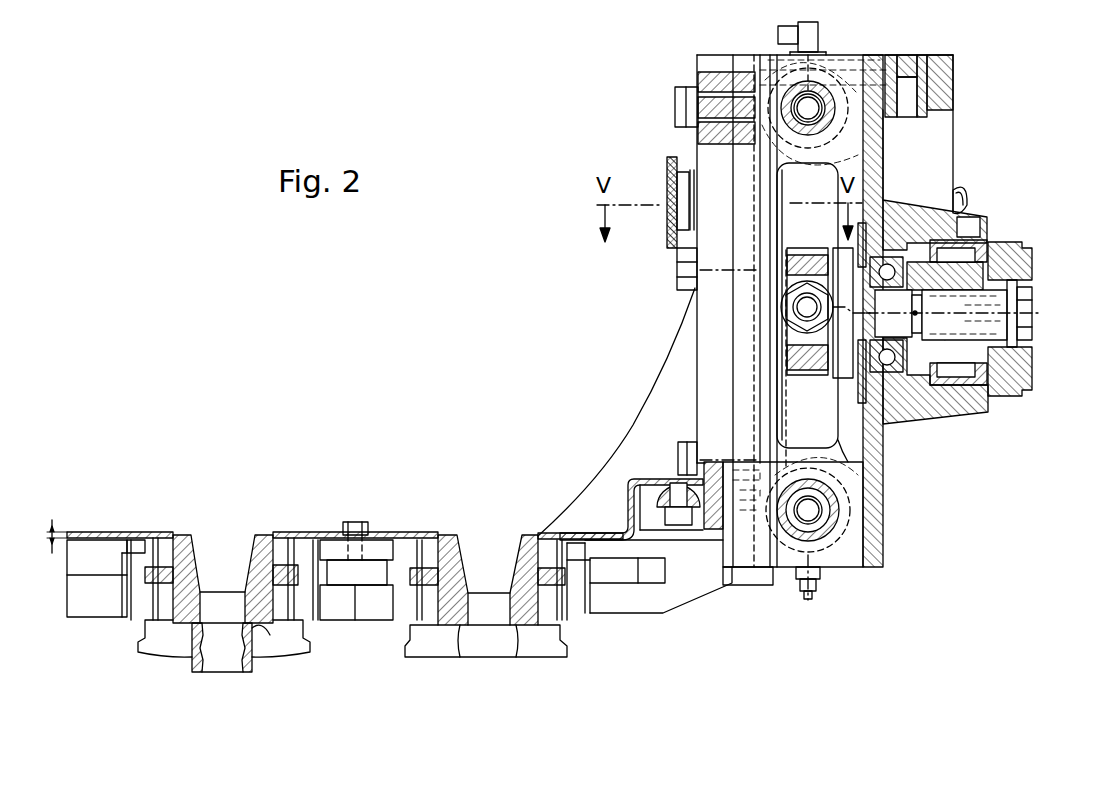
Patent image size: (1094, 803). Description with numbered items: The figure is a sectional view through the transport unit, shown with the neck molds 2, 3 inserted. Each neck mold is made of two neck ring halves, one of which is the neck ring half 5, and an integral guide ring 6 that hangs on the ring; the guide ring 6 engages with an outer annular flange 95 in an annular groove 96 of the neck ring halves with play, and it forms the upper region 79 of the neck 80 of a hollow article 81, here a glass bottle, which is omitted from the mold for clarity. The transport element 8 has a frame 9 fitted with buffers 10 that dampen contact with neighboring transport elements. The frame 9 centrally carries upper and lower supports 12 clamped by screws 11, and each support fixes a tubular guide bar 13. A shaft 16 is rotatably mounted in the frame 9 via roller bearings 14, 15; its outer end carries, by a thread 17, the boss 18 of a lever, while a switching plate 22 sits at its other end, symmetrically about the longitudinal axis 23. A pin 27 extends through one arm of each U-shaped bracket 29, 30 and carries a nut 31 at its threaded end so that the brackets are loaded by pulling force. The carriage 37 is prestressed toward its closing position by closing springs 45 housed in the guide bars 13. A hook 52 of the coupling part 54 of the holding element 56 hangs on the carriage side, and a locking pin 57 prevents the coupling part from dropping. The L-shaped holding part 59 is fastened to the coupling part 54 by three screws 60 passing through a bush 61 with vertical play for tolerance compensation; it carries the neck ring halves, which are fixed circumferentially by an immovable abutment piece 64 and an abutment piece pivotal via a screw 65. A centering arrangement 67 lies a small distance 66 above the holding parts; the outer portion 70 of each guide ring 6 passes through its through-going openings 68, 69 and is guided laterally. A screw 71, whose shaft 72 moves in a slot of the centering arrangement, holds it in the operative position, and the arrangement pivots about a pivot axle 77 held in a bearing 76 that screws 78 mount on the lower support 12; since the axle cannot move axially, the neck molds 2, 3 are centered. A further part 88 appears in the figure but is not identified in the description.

The neck mold 2 is at (150, 655).
The neck mold 3 is at (425, 658).
The neck ring half 5 is at (146, 628).
The guide ring 6 is at (196, 535).
The transport element 8 is at (952, 118).
The frame 9 is at (953, 142).
The buffers 10 is at (965, 197).
The screws 11 is at (752, 58).
The supports 12 is at (838, 55).
The tubular guide bar 13 is at (838, 140).
The roller bearing 14 is at (912, 420).
The roller bearing 15 is at (985, 412).
The shaft 16 is at (985, 300).
The thread 17 is at (995, 238).
The boss 18 is at (1028, 244).
The switching plate 22 is at (843, 378).
The longitudinal axis 23 is at (1040, 313).
The pin 27 is at (800, 308).
The U-shaped bracket 29 is at (795, 255).
The U-shaped bracket 30 is at (820, 372).
The nut 31 is at (795, 300).
The carriage 37 is at (792, 55).
The closing spring 45 is at (808, 122).
The hook 52 is at (860, 140).
The coupling part 54 is at (728, 55).
The holding element 56 is at (655, 358).
The locking pin 57 is at (694, 195).
The holding part 59 is at (85, 600).
The screws 60 is at (675, 95).
The bush 61 is at (698, 132).
The abutment piece 64 is at (80, 560).
The screw 65 is at (378, 570).
The small distance 66 is at (54, 530).
The centering arrangement 67 is at (120, 532).
The through-going opening 68 is at (182, 535).
The through-going opening 69 is at (447, 535).
The outer portion 70 is at (264, 535).
The screw 71 is at (363, 535).
The shaft 72 is at (345, 532).
The bearing 76 is at (708, 578).
The pivot axle 77 is at (660, 500).
The screws 78 is at (700, 458).
The upper region 79 is at (260, 645).
The neck 80 is at (252, 658).
The hollow article 81 is at (193, 666).
The knurled knob 88 is at (667, 168).
The outer annular flange 95 is at (300, 580).
The annular groove 96 is at (152, 578).